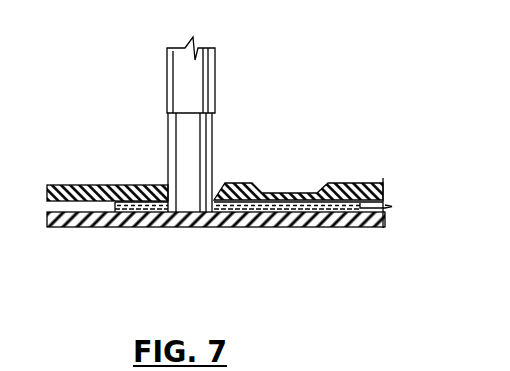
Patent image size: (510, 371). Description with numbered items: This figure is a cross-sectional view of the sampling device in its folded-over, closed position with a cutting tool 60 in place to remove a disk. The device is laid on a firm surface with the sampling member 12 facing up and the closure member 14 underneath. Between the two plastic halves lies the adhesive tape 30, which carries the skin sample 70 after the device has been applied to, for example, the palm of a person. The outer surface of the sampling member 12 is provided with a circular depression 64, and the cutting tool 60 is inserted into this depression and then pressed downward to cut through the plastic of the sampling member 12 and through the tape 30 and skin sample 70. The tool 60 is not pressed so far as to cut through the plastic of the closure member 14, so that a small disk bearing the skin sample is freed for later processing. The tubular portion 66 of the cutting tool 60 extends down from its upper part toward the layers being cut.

The sampling member 12 is at (73, 185).
The closure member 14 is at (123, 227).
The adhesive tape 30 is at (272, 227).
The cutting tool 60 is at (205, 87).
The circular depression 64 is at (265, 187).
The tube 66 is at (172, 170).
The skin sample 70 is at (218, 227).